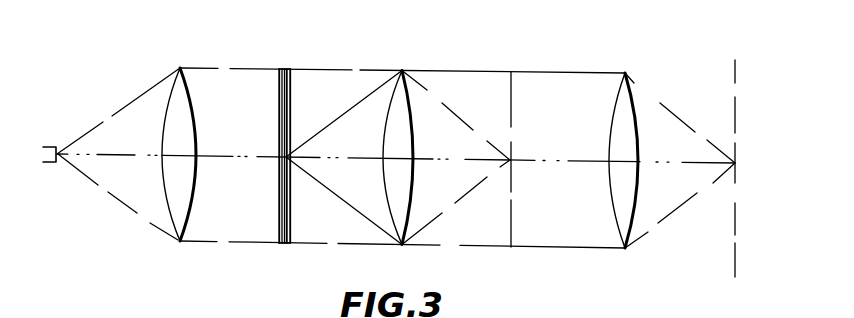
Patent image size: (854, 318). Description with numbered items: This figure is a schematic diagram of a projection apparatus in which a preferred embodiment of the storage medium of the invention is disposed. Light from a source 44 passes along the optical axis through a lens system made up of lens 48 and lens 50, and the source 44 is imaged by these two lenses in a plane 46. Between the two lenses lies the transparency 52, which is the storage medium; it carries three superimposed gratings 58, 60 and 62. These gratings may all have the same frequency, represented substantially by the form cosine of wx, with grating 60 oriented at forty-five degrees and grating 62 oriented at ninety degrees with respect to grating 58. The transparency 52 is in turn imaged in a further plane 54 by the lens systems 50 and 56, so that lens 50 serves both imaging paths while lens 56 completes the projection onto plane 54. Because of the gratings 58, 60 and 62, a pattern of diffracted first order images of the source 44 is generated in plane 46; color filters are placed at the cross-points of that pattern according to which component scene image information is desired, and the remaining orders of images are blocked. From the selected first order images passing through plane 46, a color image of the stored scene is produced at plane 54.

The source 44 is at (45, 165).
The plane 46 is at (513, 105).
The lens system 48 is at (177, 95).
The lens system 50 is at (399, 137).
The transparency 52 is at (284, 127).
The plane 54 is at (737, 121).
The lens system 56 is at (625, 103).
The grating 58 is at (278, 68).
The grating 60 is at (287, 68).
The grating 62 is at (290, 68).